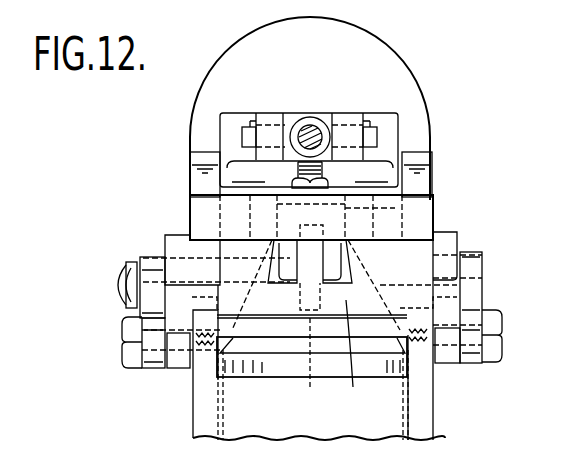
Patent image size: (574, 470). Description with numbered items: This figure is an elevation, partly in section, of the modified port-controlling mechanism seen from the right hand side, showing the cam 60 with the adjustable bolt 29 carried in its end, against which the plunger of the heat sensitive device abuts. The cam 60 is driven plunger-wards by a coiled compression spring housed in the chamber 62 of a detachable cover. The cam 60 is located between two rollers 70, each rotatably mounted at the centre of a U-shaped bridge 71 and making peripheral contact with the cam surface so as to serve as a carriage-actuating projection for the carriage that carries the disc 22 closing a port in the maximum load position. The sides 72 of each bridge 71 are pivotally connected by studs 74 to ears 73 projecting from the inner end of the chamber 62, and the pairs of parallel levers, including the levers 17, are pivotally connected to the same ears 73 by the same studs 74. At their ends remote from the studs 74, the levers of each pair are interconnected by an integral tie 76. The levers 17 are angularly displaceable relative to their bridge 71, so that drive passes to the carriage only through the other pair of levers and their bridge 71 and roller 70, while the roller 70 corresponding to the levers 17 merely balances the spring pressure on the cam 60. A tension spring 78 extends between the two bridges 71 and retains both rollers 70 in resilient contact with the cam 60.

The disc 22 is at (398, 88).
The levers 17 is at (200, 159).
The adjustable bolt 29 is at (287, 110).
The tie 76 is at (267, 215).
The cam 60 is at (395, 205).
The tension spring 78 is at (125, 270).
The ears 73 is at (138, 310).
The sides 72 is at (153, 372).
The studs 74 is at (131, 370).
The chamber 62 is at (208, 417).
The rollers 70 is at (308, 380).
The U-shaped bridge 71 is at (353, 387).